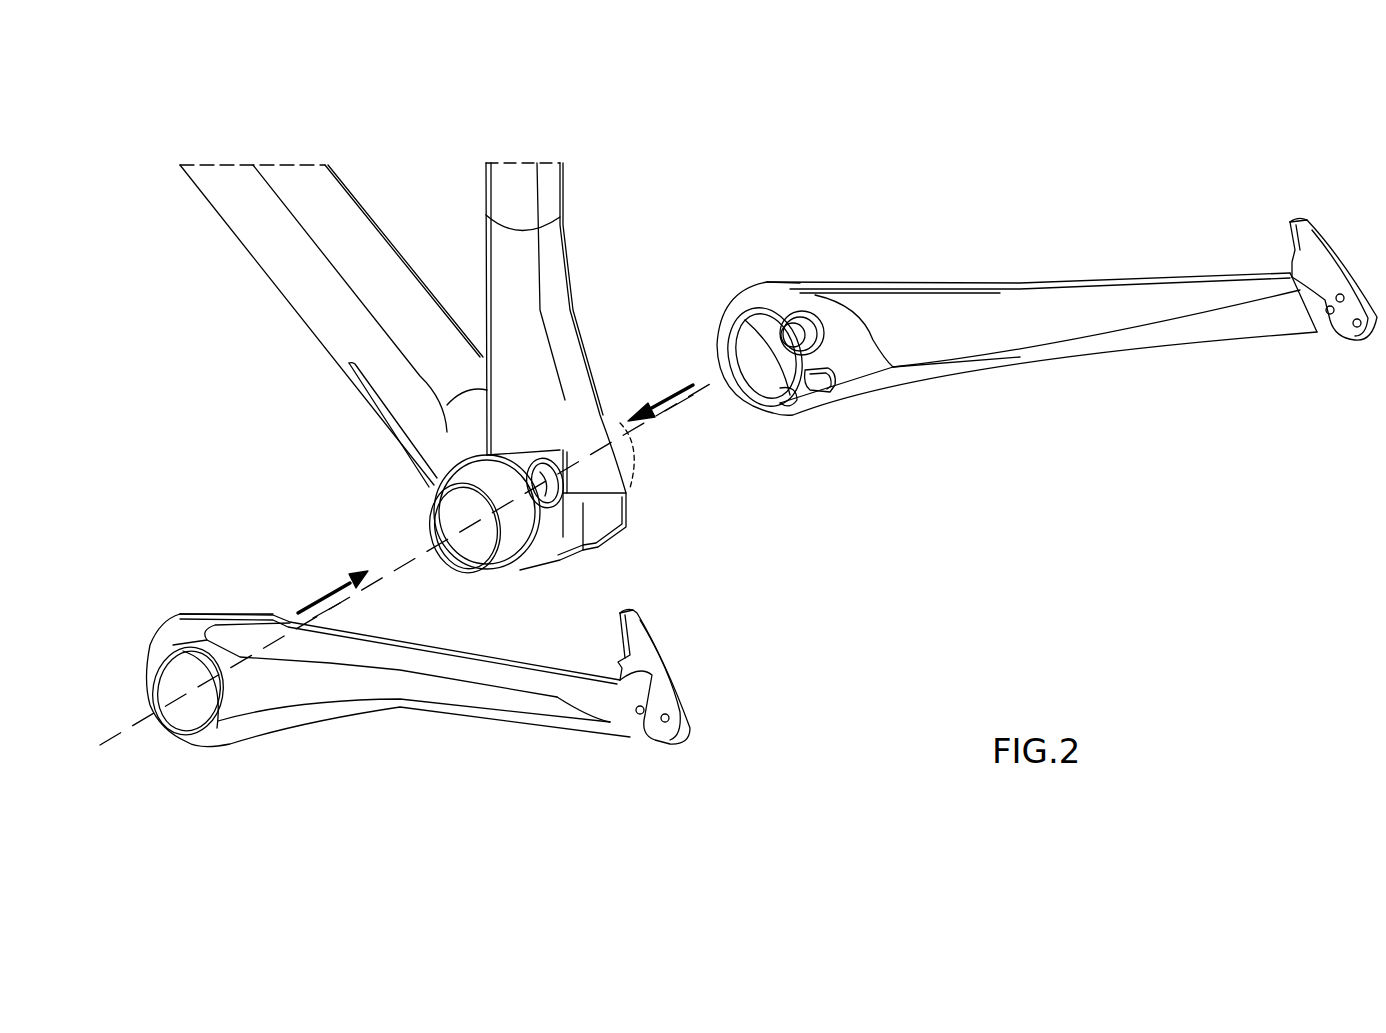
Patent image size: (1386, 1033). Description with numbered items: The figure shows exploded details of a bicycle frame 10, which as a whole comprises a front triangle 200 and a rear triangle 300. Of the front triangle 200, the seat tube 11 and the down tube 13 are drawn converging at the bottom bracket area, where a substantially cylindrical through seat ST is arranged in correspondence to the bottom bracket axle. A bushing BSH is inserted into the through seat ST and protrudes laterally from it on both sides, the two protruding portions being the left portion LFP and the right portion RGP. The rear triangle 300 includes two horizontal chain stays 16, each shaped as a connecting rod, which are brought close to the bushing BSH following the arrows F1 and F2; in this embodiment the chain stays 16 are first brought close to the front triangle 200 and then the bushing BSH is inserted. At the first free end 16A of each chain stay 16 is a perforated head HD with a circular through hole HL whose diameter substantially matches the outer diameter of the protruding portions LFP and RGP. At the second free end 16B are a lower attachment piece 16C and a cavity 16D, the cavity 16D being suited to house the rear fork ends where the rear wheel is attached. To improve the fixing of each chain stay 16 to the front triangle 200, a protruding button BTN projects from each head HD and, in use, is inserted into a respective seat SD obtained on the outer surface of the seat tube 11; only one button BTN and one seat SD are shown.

The front triangle 200 is at (517, 136).
The frame 10 is at (445, 222).
The seat tube 11 is at (555, 260).
The down tube 13 is at (293, 302).
The rear triangle 300 is at (998, 260).
The horizontal chain stay 16 is at (517, 703).
The first free end 16A is at (233, 722).
The second free end 16B is at (688, 702).
The lower attachment piece 16C is at (637, 647).
The cavity 16D is at (652, 740).
The perforated head HD is at (211, 613).
The circular through hole HL is at (173, 713).
The protruding button BTN is at (418, 703).
The bushing BSH is at (613, 420).
The left protruding portion LFP is at (447, 508).
The seat SD is at (563, 490).
The right protruding portion RGP is at (630, 457).
The through seat ST is at (410, 458).
The arrow F1 is at (325, 592).
The arrow F2 is at (660, 388).